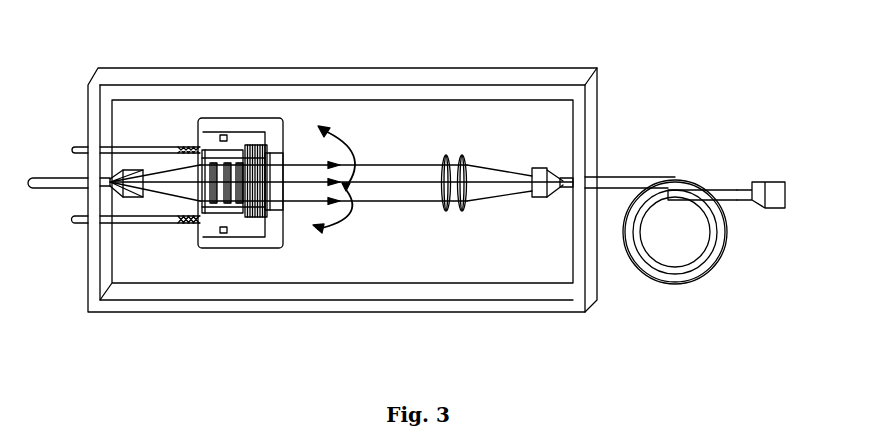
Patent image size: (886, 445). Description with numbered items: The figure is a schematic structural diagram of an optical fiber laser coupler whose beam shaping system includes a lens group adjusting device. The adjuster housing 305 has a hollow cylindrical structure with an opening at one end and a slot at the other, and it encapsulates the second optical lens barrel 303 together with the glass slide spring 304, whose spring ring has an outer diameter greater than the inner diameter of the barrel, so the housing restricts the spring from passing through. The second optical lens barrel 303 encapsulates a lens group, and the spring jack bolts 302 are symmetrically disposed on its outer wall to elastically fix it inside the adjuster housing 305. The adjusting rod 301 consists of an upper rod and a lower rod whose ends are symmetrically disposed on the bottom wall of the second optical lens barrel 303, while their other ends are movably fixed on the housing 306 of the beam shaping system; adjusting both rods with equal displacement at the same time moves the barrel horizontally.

The adjusting rod 301 is at (163, 216).
The spring jack bolts 302 is at (223, 240).
The second optical lens barrel 303 is at (232, 150).
The glass slide spring 304 is at (253, 218).
The adjuster housing 305 is at (273, 140).
The housing 306 is at (348, 302).